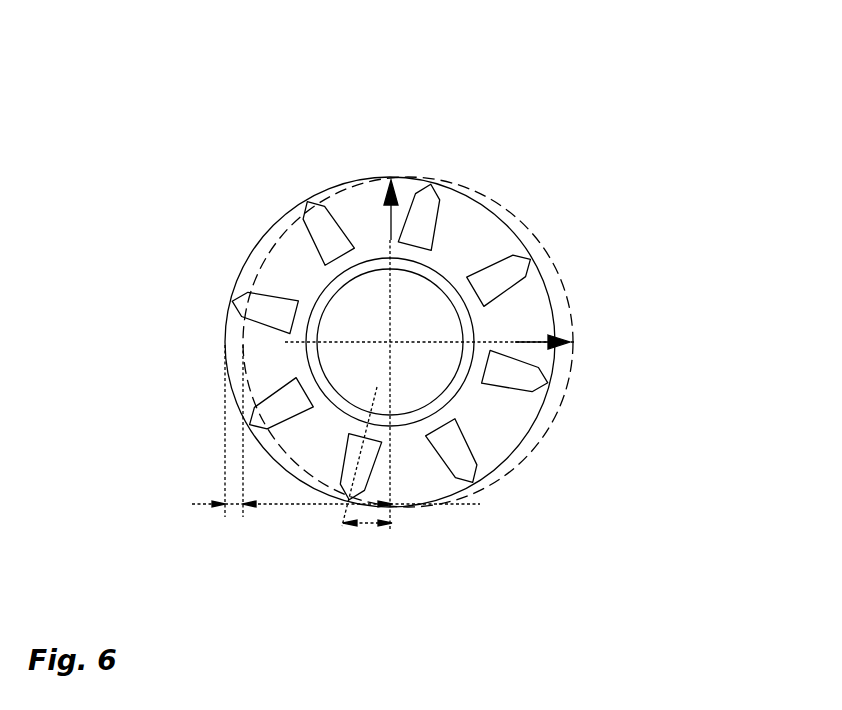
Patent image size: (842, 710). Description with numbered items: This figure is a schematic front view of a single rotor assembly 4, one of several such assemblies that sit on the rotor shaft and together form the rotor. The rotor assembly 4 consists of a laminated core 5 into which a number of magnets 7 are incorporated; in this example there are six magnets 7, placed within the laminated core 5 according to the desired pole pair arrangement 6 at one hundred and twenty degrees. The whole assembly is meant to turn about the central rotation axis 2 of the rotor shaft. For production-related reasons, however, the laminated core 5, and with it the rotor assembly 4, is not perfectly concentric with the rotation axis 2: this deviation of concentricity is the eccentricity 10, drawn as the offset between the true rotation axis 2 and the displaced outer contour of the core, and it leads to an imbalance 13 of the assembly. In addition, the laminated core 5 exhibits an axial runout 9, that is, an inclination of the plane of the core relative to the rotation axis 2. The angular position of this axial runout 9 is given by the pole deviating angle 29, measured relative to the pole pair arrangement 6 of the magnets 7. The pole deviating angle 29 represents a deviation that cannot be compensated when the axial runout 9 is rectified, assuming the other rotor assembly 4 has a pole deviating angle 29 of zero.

The central rotation axis 2 is at (390, 341).
The rotor assembly 4 is at (724, 76).
The laminated core 5 is at (487, 243).
The pole pair arrangement 6 is at (432, 246).
The magnets 7 is at (428, 194).
The axial runout 9 is at (388, 225).
The eccentricity 10 is at (207, 507).
The imbalance 13 is at (542, 342).
The pole deviating angle 29 is at (370, 524).